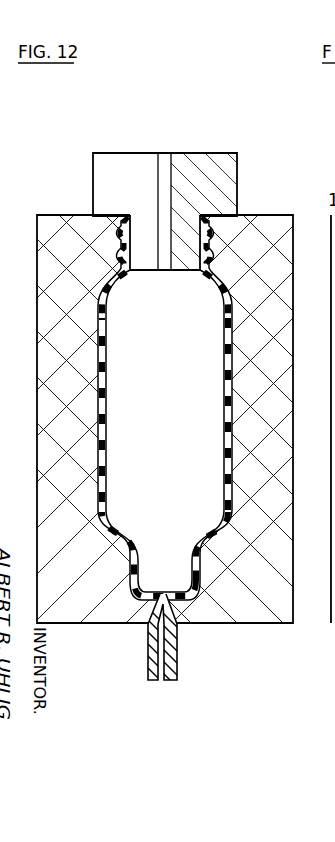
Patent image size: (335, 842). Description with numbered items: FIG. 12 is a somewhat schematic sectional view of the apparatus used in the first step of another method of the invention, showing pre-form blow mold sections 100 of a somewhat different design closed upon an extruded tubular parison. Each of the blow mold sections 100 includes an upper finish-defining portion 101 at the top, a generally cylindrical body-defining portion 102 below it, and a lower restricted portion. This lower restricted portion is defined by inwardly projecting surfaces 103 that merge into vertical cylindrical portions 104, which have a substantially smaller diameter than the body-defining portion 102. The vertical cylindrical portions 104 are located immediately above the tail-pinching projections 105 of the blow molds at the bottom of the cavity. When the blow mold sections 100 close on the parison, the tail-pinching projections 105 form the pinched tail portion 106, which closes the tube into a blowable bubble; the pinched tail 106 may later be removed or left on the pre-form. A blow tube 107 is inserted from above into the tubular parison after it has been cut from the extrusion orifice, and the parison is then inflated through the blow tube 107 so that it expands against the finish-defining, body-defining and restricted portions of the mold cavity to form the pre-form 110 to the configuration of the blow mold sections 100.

The pre-form blow mold sections 100 is at (60, 209).
The upper finish-defining portion 101 is at (206, 252).
The body-defining portion 102 is at (224, 316).
The inwardly projecting surfaces 103 is at (206, 549).
The vertical cylindrical portions 104 is at (196, 576).
The tail-pinching projections 105 is at (176, 598).
The pinched tail portion 106 is at (177, 677).
The blow tube 107 is at (214, 196).
The pre-form 110 is at (108, 392).